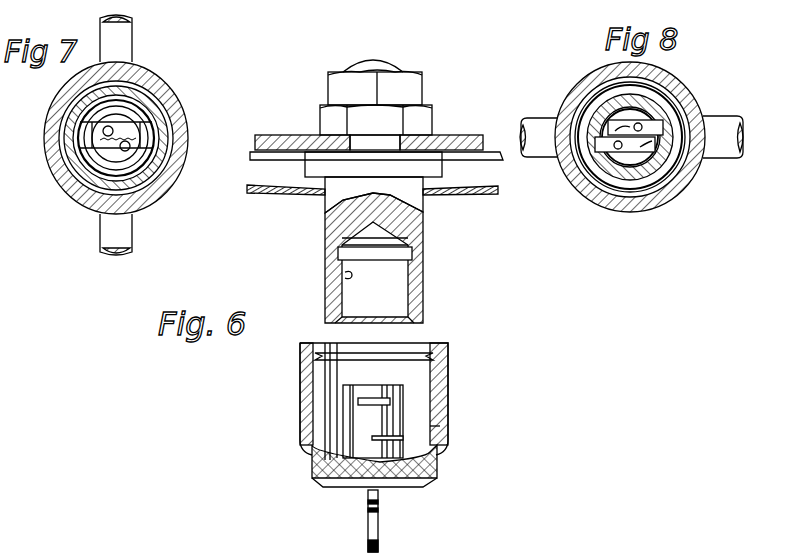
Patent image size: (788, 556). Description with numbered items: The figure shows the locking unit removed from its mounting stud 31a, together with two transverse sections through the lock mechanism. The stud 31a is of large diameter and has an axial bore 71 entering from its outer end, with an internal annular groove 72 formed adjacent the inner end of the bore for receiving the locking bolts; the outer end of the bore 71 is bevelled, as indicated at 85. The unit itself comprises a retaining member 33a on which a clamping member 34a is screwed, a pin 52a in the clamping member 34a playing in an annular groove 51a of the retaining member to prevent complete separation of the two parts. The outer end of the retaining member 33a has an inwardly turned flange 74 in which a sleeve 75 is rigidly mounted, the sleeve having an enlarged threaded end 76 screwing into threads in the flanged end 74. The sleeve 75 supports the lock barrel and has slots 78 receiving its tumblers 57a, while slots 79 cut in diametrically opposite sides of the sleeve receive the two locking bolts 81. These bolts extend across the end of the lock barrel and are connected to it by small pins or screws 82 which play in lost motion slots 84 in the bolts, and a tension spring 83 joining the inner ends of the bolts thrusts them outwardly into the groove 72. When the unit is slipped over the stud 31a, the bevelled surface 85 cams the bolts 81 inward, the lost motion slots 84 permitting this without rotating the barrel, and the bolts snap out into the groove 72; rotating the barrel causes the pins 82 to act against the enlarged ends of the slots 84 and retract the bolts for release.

In FIG. 6, the inwardly turned flange 74 is at (318, 3).
In FIG. 6, the bevelled surface 85 is at (352, 0).
In FIG. 6, the slots 78 is at (368, 0).
In FIG. 6, the enlarged threaded end 76 is at (432, 0).
In FIG. 6, the sleeve 75 is at (400, 3).
In FIG. 6, the tumblers 57a is at (440, 0).
In FIG. 6, the internal annular groove 72 is at (340, 253).
In FIG. 6, the axial bore 71 is at (345, 275).
In FIG. 6, the stud 31a is at (417, 275).
In FIG. 6, the clamping member 34a is at (440, 365).
In FIG. 7, the locking bolts 81 is at (140, 150).
In FIG. 6, the locking bolts 81 is at (390, 402).
In FIG. 6, the pin 52a is at (436, 427).
In FIG. 6, the retaining member 33a is at (437, 465).
In FIG. 6, the annular groove 51a is at (315, 418).
In FIG. 7, the pins 82 is at (162, 93).
In FIG. 7, the tension spring 83 is at (120, 133).
In FIG. 8, the lost motion slots 84 is at (665, 125).
In FIG. 8, the slots 79 is at (687, 123).